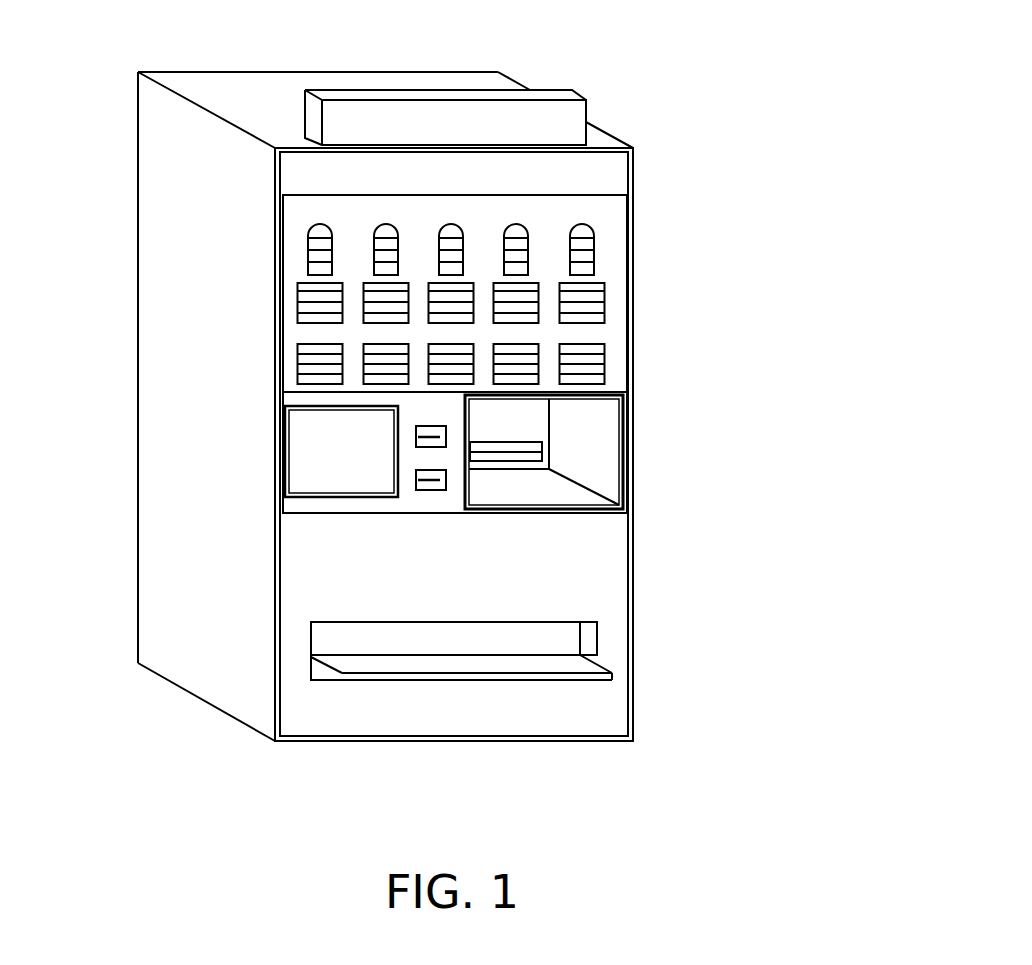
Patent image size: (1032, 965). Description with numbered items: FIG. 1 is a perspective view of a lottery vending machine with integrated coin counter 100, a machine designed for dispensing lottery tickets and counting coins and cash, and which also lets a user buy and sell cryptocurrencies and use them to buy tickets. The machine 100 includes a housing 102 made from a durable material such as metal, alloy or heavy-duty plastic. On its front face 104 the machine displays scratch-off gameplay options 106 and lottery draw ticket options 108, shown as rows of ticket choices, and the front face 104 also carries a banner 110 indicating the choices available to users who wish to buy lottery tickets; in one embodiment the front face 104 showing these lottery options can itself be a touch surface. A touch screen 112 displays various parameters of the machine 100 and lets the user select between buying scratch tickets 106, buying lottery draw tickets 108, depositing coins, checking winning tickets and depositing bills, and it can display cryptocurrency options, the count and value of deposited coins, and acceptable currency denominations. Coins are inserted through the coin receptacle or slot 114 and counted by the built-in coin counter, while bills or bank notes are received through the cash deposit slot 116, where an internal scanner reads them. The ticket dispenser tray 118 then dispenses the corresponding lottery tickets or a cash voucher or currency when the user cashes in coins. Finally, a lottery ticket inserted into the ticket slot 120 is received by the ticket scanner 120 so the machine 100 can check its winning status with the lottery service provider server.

The lottery vending machine with integrated coin counter 100 is at (124, 84).
The housing 102 is at (698, 173).
The front face 104 is at (607, 216).
The scratch-off gameplay options 106 is at (620, 268).
The lottery draw ticket options 108 is at (268, 282).
The banner 110 is at (545, 173).
The touch screen 112 is at (313, 450).
The coin receptacle or slot 114 is at (573, 448).
The cash deposit slot 116 is at (418, 437).
The ticket dispenser tray 118 is at (542, 645).
The ticket slot 120 is at (418, 480).